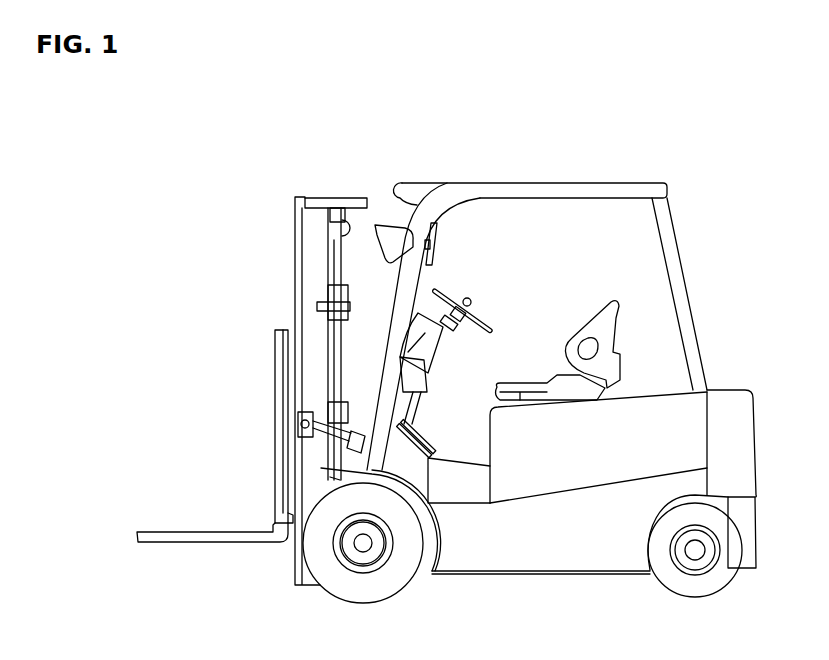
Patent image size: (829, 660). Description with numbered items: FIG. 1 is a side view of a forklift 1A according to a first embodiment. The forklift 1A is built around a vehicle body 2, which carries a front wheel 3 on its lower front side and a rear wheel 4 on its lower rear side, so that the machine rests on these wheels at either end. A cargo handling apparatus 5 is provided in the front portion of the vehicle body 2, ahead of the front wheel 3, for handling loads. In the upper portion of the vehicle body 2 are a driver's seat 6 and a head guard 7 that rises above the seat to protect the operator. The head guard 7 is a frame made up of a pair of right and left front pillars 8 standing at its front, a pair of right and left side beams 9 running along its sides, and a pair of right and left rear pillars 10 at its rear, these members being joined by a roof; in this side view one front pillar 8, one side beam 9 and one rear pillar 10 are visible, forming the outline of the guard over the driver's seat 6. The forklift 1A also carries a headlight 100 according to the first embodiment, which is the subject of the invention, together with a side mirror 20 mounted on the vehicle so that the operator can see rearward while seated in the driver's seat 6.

The forklift 1A is at (494, 119).
The vehicle body 2 is at (537, 547).
The front wheel 3 is at (368, 588).
The rear wheel 4 is at (700, 587).
The cargo handling apparatus 5 is at (310, 242).
The driver's seat 6 is at (603, 330).
The head guard 7 is at (593, 188).
The front pillars 8 is at (393, 333).
The side beams 9 is at (532, 188).
The rear pillars 10 is at (680, 298).
The side mirror 20 is at (436, 247).
The headlight 100 is at (392, 235).